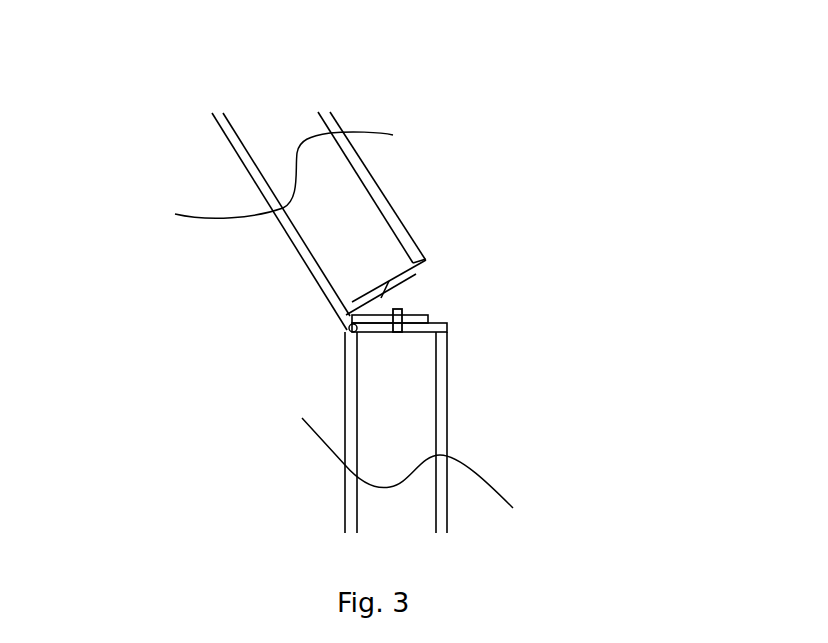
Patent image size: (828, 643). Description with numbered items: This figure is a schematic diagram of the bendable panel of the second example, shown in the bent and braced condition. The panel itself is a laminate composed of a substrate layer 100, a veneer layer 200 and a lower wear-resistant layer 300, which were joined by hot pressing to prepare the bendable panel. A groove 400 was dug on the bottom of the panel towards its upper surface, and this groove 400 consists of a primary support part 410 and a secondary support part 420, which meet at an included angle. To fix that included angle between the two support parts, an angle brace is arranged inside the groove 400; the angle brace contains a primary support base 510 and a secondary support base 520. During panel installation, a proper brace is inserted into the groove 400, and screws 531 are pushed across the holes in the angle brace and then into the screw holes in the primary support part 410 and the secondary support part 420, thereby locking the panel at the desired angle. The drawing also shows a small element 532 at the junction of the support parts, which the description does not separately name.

The substrate layer 100 is at (367, 265).
The veneer layer 200 is at (402, 223).
The lower wear-resistant layer 300 is at (333, 293).
The groove 400 is at (428, 299).
The primary support part 410 is at (428, 267).
The secondary support part 420 is at (448, 325).
The primary support base 510 is at (337, 310).
The secondary support base 520 is at (357, 328).
The screws 531 is at (423, 247).
The stiffener 532 is at (403, 315).